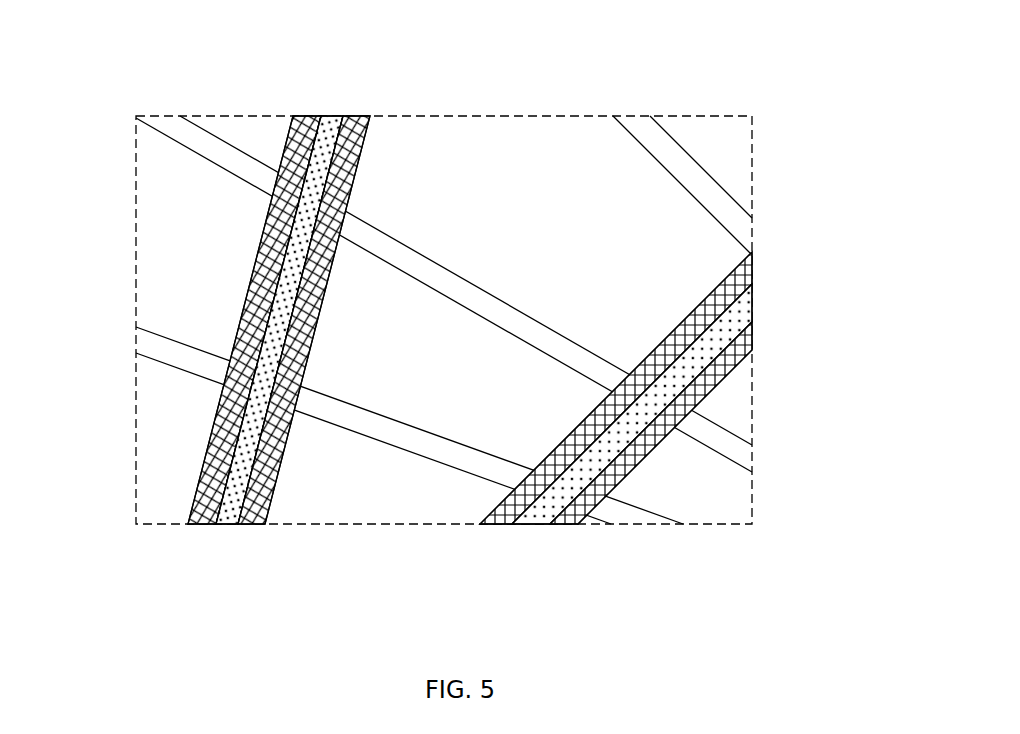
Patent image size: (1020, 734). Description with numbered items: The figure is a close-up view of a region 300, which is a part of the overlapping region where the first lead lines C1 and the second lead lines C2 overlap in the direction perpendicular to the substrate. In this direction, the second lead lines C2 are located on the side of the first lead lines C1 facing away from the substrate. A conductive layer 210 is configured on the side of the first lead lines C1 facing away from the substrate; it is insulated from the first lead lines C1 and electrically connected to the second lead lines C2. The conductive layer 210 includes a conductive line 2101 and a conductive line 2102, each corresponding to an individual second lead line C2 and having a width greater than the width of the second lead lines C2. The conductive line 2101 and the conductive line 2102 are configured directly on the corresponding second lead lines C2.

The conductive layer 210 is at (391, 320).
The conductive line 2101 is at (725, 423).
The conductive line 2102 is at (304, 356).
The first lead lines C1 is at (392, 292).
The second lead lines C2 is at (527, 348).
The region 300 is at (511, 339).